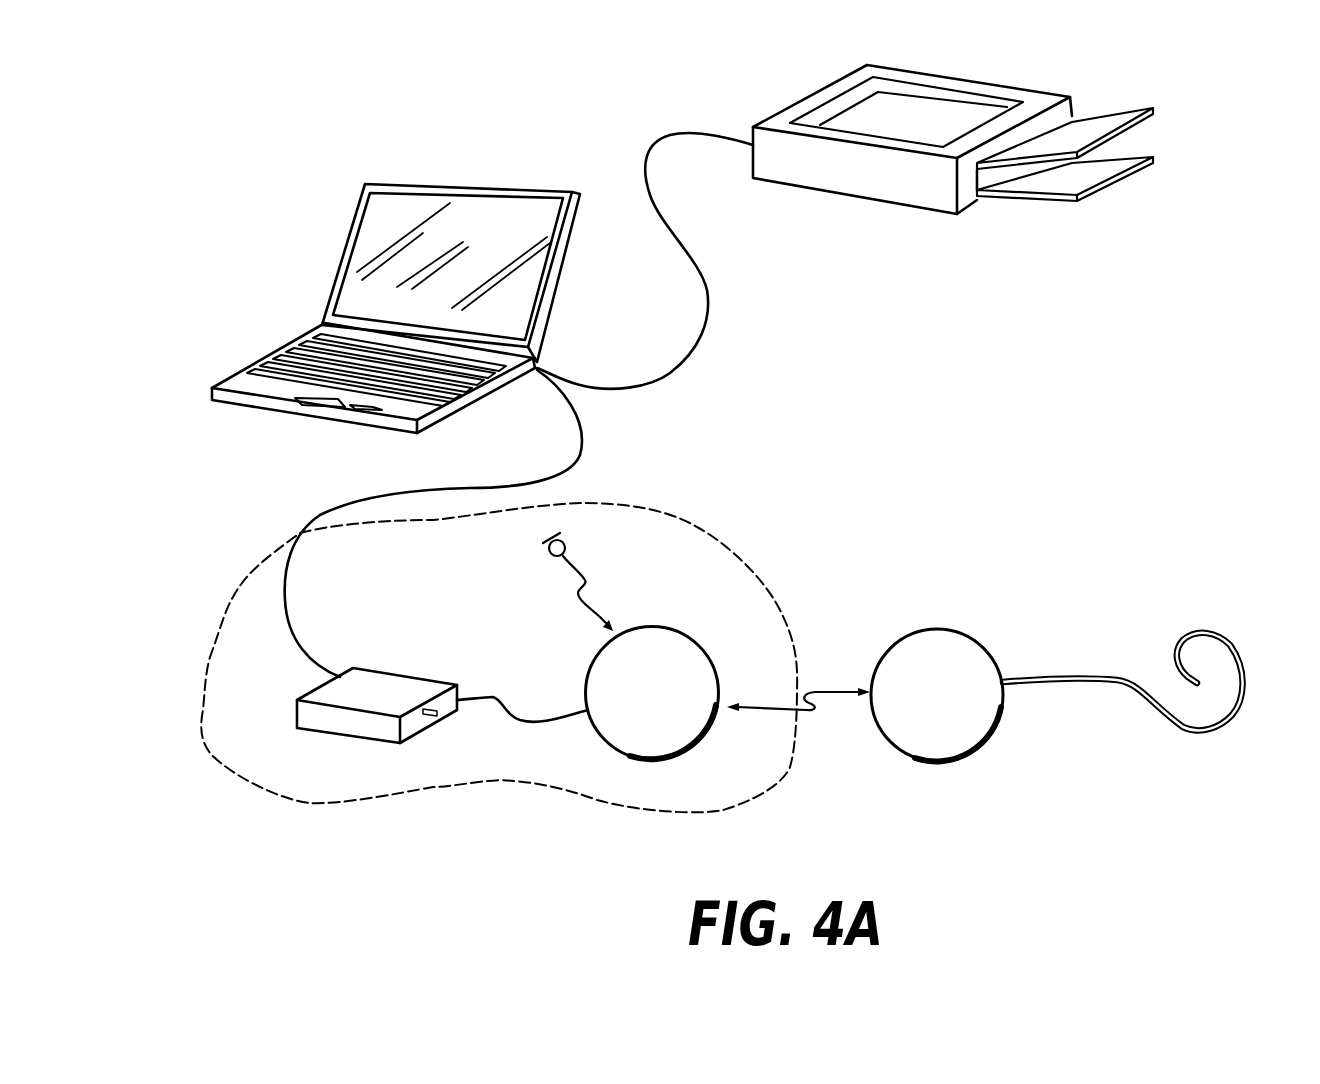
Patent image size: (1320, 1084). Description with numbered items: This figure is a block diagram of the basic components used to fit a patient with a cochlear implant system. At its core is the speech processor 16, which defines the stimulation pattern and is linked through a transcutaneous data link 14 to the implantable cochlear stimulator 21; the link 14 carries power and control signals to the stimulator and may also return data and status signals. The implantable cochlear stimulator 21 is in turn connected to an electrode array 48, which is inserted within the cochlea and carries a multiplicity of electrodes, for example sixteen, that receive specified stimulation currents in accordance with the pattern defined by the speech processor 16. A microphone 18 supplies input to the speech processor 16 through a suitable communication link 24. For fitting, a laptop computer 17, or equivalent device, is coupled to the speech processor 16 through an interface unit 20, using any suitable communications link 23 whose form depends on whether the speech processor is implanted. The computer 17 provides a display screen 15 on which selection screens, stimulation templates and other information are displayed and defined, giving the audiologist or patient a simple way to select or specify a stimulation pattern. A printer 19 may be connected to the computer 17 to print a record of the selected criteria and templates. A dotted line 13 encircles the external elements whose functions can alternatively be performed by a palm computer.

The dotted line 13 is at (330, 803).
The data link 14 is at (828, 690).
The display screen 15 is at (386, 233).
The speech processor 16 is at (671, 627).
The laptop computer 17 is at (394, 318).
The microphone 18 is at (567, 547).
The printer 19 is at (870, 200).
The interface unit 20 is at (413, 673).
The implantable cochlear stimulator 21 is at (932, 628).
The communications link 23 is at (493, 697).
The communication link 24 is at (590, 578).
The electrode array 48 is at (1200, 628).